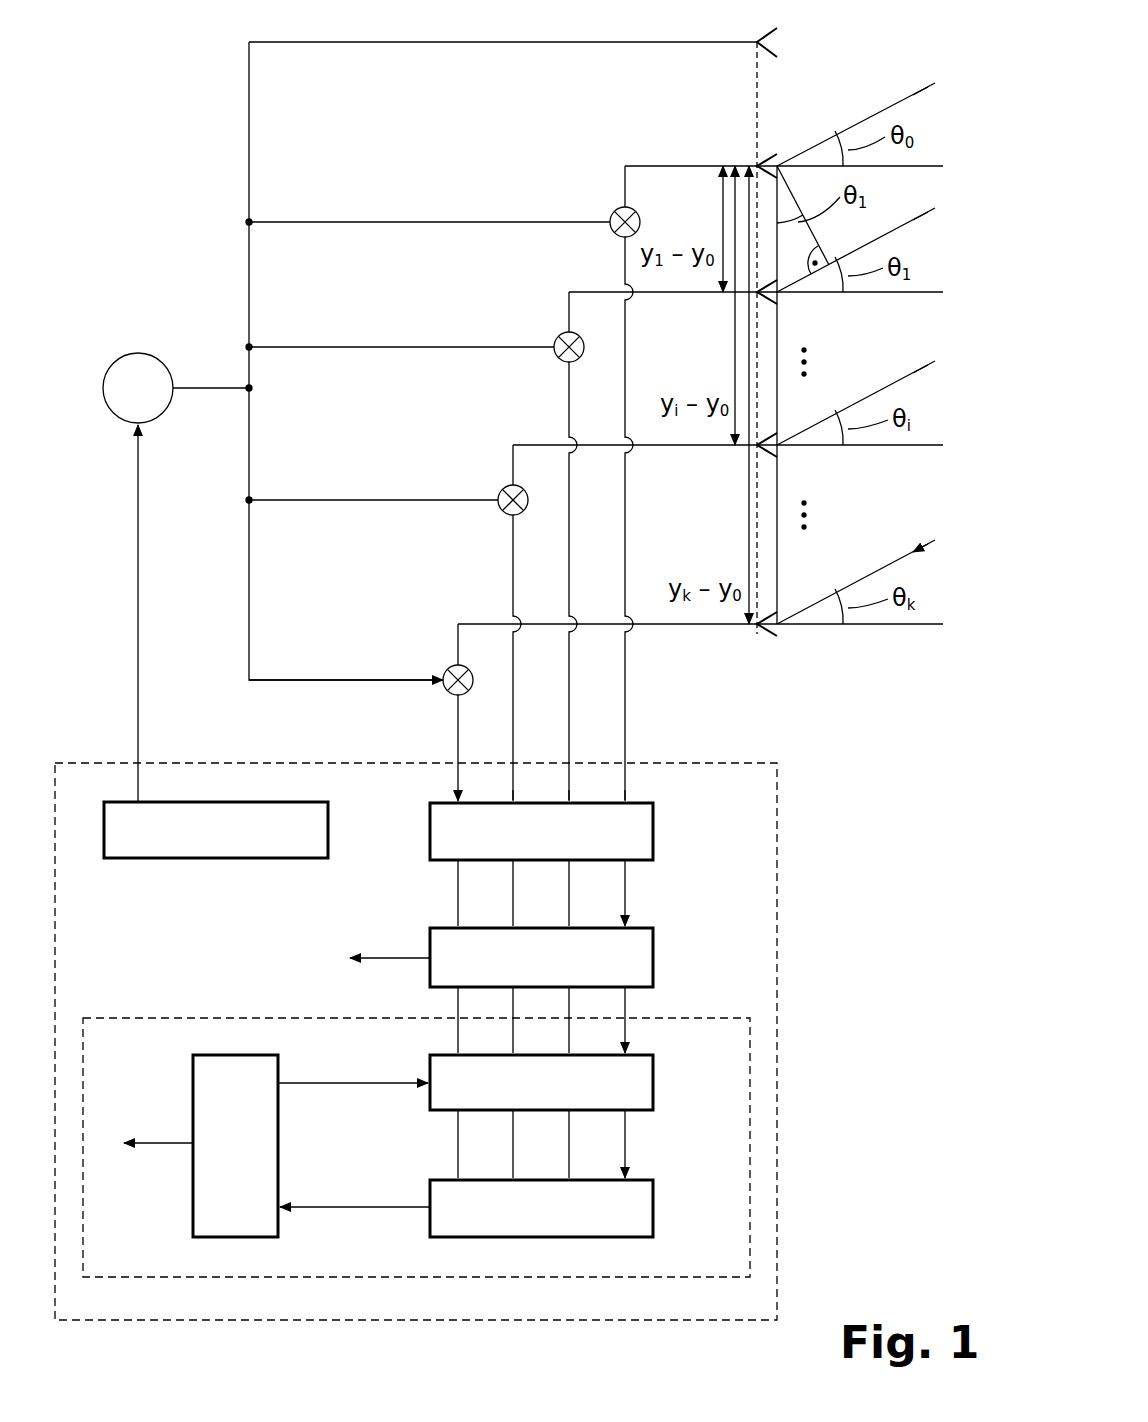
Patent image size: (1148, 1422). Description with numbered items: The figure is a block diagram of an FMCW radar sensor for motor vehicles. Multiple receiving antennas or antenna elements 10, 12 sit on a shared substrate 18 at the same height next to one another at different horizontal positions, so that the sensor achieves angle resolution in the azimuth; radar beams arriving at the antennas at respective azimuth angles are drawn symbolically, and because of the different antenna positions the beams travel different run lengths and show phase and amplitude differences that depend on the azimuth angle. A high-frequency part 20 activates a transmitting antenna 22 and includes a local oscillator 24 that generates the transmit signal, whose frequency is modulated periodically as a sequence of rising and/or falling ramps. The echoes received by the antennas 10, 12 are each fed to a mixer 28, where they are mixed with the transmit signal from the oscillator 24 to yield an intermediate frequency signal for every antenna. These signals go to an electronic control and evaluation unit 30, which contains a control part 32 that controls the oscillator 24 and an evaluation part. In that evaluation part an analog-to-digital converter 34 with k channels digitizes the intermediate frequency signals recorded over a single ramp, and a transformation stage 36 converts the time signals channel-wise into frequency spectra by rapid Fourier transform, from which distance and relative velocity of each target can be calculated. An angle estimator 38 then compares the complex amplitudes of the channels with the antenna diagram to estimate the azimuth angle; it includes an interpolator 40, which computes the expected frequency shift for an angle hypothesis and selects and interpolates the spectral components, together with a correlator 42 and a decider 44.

The receiving antenna 10 is at (760, 163).
The antenna element 12 is at (779, 298).
The shared substrate 18 is at (757, 85).
The high-frequency part 20 is at (150, 188).
The transmitting antenna 22 is at (762, 36).
The local oscillator 24 is at (138, 353).
The mixer 28 is at (612, 212).
The control and evaluation unit 30 is at (777, 865).
The control part 32 is at (245, 860).
The analog-to-digital converter 34 is at (655, 830).
The transformation stage 36 is at (655, 957).
The angle estimator 38 is at (116, 1018).
The interpolator 40 is at (655, 1082).
The correlator 42 is at (655, 1205).
The decider 44 is at (280, 1133).